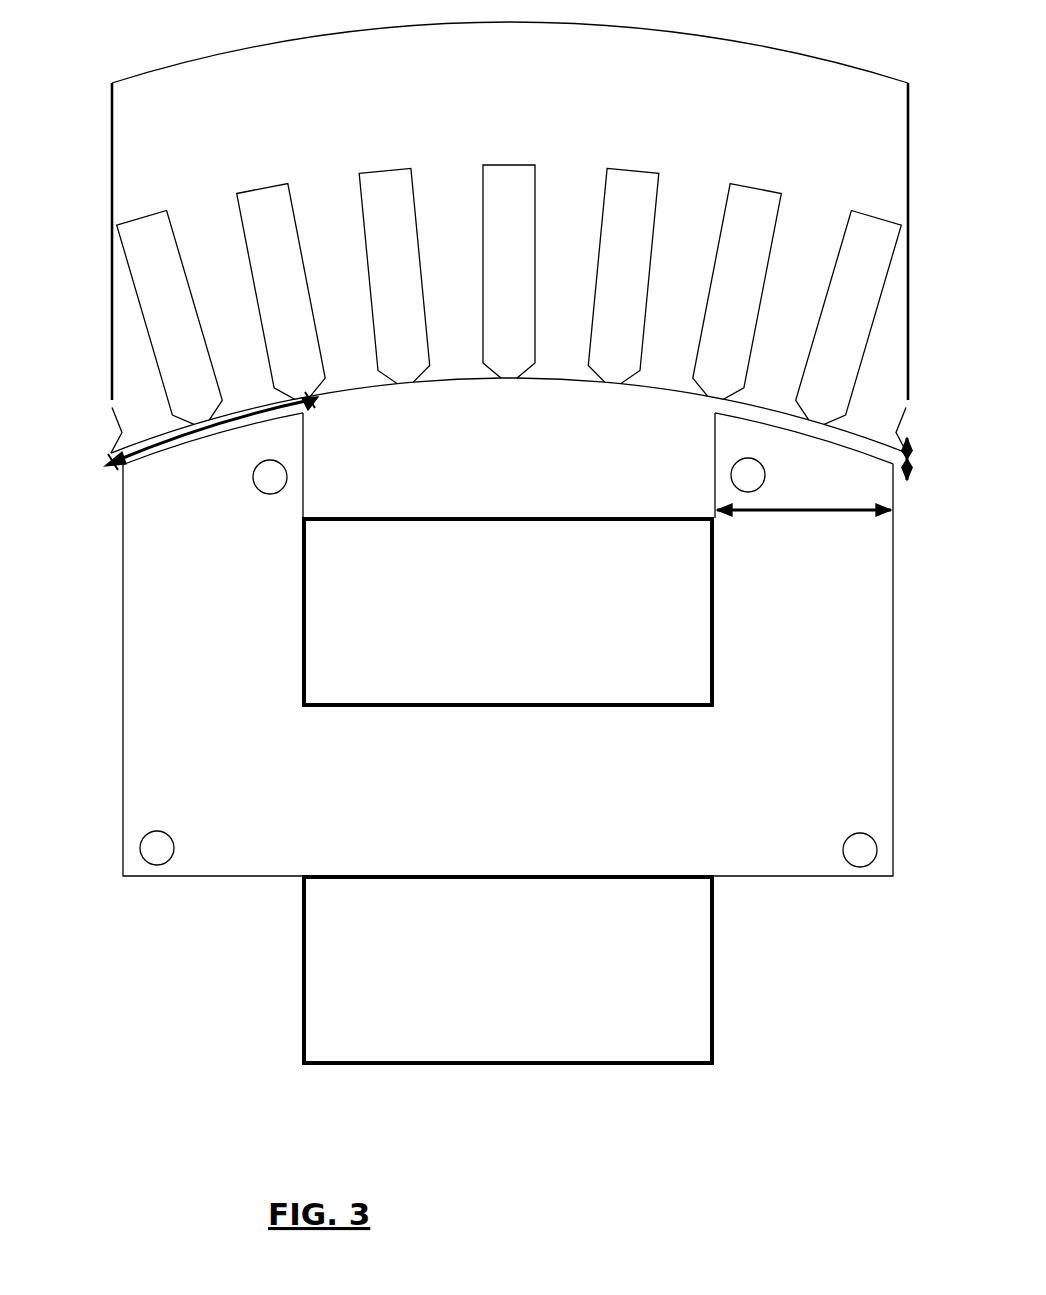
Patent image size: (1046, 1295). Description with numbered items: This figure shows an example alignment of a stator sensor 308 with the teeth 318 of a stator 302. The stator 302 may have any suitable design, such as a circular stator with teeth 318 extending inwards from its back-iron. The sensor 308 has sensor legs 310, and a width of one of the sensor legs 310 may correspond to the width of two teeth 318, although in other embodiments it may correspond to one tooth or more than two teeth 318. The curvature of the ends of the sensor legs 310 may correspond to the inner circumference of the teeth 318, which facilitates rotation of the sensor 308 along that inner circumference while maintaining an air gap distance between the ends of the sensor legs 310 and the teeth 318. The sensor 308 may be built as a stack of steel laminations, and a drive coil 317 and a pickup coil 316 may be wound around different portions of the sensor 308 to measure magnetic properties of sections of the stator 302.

The stator 302 is at (266, 54).
The stator sensor 308 is at (785, 853).
The sensor legs 310 is at (727, 443).
The pickup coil 316 is at (527, 518).
The drive coil 317 is at (718, 1000).
The teeth 318 is at (238, 377).